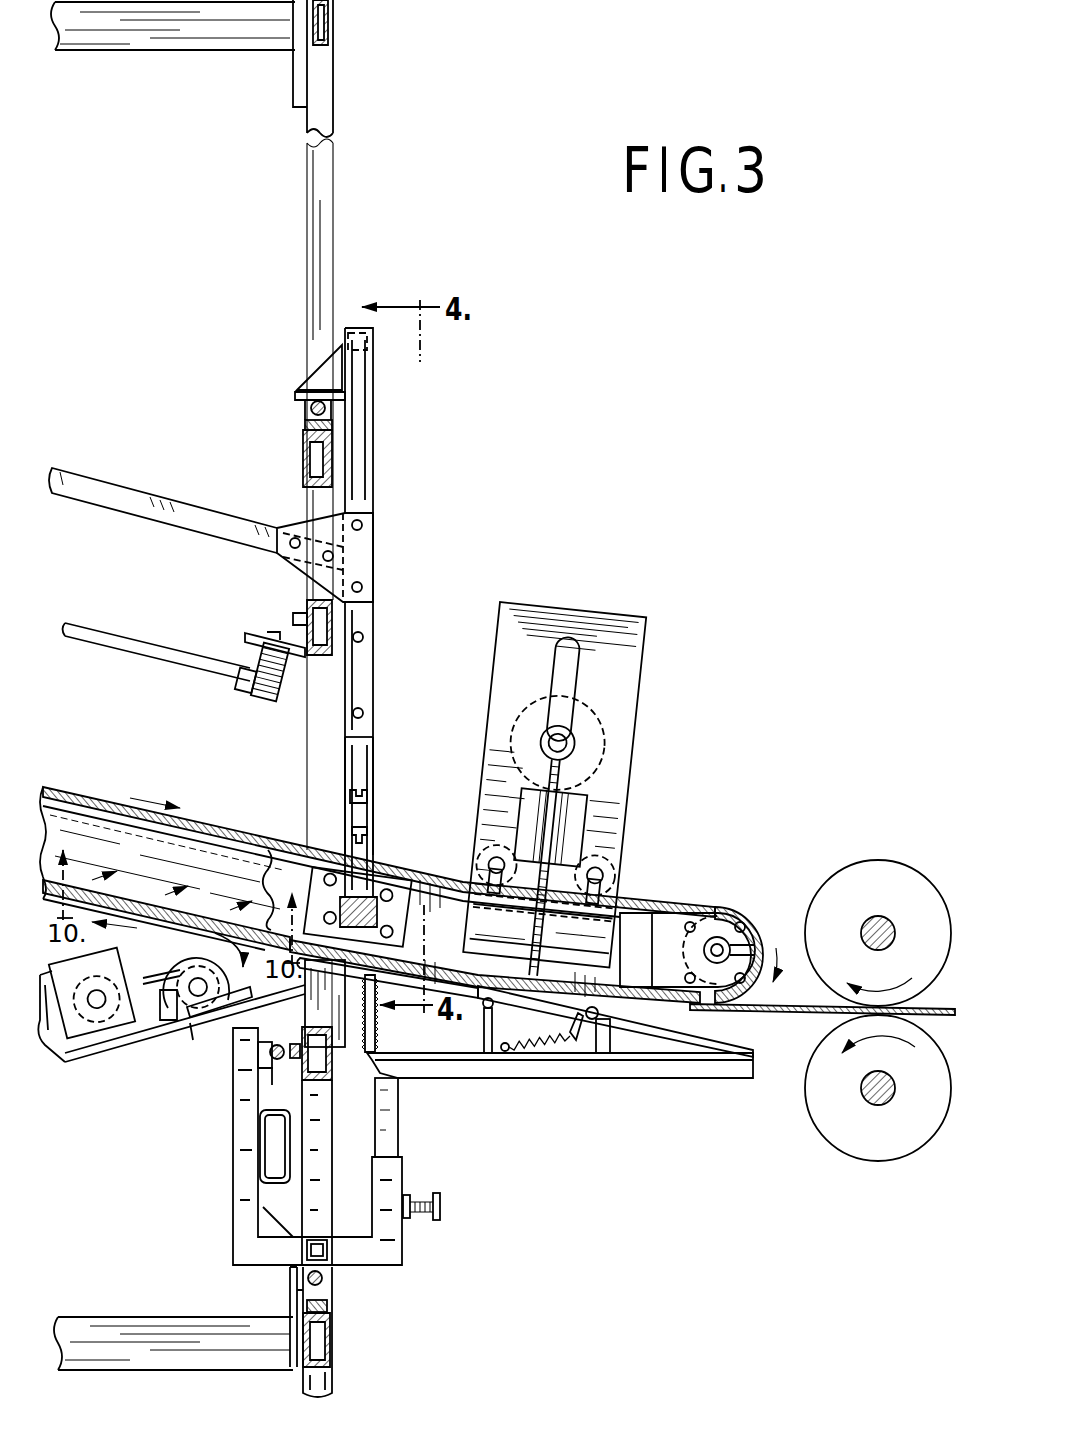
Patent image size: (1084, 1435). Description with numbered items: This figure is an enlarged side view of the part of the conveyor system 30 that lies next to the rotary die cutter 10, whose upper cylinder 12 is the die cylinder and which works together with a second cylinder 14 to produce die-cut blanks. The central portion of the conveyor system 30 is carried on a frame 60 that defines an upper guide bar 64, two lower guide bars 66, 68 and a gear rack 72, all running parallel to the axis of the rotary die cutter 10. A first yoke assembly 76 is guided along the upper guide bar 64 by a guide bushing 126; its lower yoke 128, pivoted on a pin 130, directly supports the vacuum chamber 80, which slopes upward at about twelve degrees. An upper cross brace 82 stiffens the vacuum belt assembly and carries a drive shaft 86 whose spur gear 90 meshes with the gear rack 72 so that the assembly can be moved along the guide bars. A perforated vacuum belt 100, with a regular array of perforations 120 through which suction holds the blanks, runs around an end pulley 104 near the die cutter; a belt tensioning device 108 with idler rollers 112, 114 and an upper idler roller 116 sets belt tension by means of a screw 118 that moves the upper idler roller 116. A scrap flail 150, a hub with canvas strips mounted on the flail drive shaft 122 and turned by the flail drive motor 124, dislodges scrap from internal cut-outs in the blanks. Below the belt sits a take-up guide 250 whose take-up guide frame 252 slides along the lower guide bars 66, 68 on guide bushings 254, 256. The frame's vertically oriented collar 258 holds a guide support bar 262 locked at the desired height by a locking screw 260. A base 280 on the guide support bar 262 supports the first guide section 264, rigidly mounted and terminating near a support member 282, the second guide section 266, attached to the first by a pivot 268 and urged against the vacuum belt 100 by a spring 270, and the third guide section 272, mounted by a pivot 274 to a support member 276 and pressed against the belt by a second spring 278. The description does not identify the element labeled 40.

The rotary die cutter 10 is at (867, 842).
The upper cylinder 12 is at (911, 866).
The cylinder 14 is at (902, 1150).
The conveyor system 30 is at (343, 100).
The conveyor assembly 40 is at (742, 833).
The frame 60 is at (168, 40).
The upper guide bar 64 is at (340, 408).
The lower guide bar 66 is at (270, 1052).
The lower guide bar 68 is at (330, 1278).
The gear rack 72 is at (244, 632).
The first yoke assembly 76 is at (362, 660).
The vacuum chamber 80 is at (287, 862).
The upper cross brace 82 is at (213, 512).
The drive shaft 86 is at (148, 652).
The spur gear 90 is at (258, 652).
The vacuum belt 100 is at (80, 789).
The end pulley 104 is at (749, 900).
The belt tensioning device 108 is at (637, 743).
The idler roller 112 is at (492, 860).
The idler roller 114 is at (612, 873).
The upper idler roller 116 is at (588, 725).
The screw 118 is at (560, 825).
The perforations 120 is at (143, 925).
The flail drive shaft 122 is at (197, 990).
The flail drive motor 124 is at (43, 1030).
The guide bushing 126 is at (300, 408).
The lower yoke 128 is at (350, 812).
The pin 130 is at (352, 790).
The scrap flail 150 is at (201, 945).
The take-up guide 250 is at (700, 1090).
The take-up guide frame 252 is at (245, 1183).
The guide bushing 254 is at (273, 1070).
The guide bushing 256 is at (293, 1283).
The vertically oriented collar 258 is at (390, 1182).
The locking screw 260 is at (440, 1208).
The guide support bar 262 is at (558, 1073).
The first guide section 264 is at (725, 1047).
The second guide section 266 is at (557, 1010).
The pivot 268 is at (600, 1022).
The spring 270 is at (555, 1043).
The third guide section 272 is at (403, 980).
The pivot 274 is at (490, 1006).
The support member 276 is at (485, 1037).
The second spring 278 is at (377, 1025).
The base 280 is at (717, 1063).
The support member 282 is at (640, 1040).